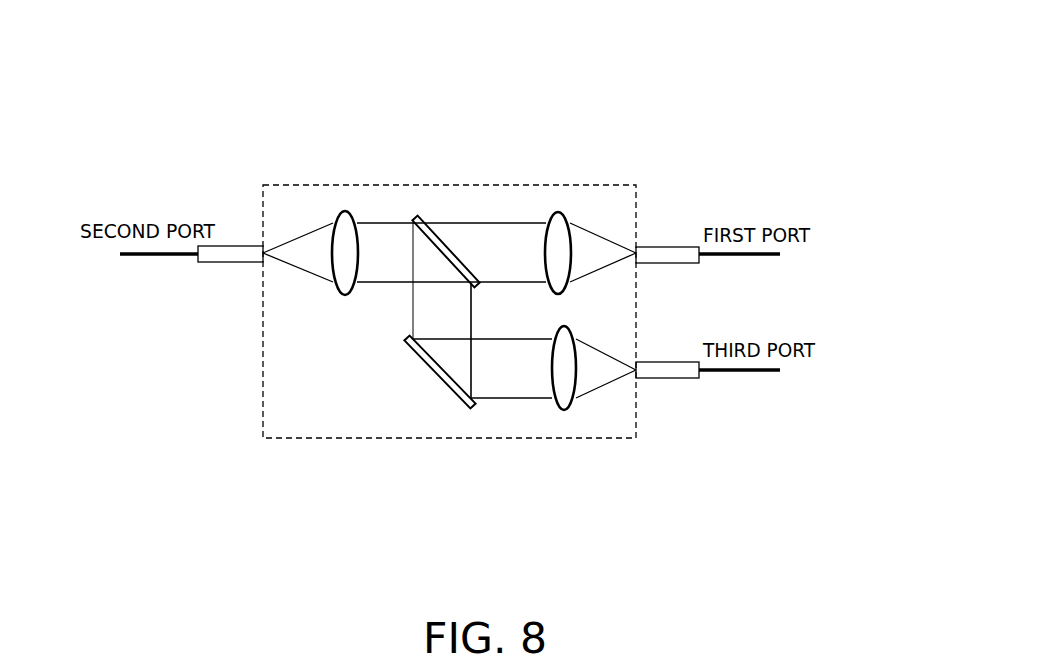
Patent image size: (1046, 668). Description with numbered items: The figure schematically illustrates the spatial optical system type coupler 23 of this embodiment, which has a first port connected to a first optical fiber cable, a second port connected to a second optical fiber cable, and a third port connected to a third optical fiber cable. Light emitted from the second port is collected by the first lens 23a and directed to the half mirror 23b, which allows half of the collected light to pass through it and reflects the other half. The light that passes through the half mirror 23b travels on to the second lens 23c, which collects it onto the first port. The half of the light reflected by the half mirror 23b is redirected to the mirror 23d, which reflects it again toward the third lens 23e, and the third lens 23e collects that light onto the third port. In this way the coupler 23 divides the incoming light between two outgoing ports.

The spatial optical system type coupler 23 is at (666, 74).
The first lens 23a is at (343, 211).
The half mirror 23b is at (416, 216).
The second lens 23c is at (558, 213).
The mirror 23d is at (474, 410).
The third lens 23e is at (565, 410).